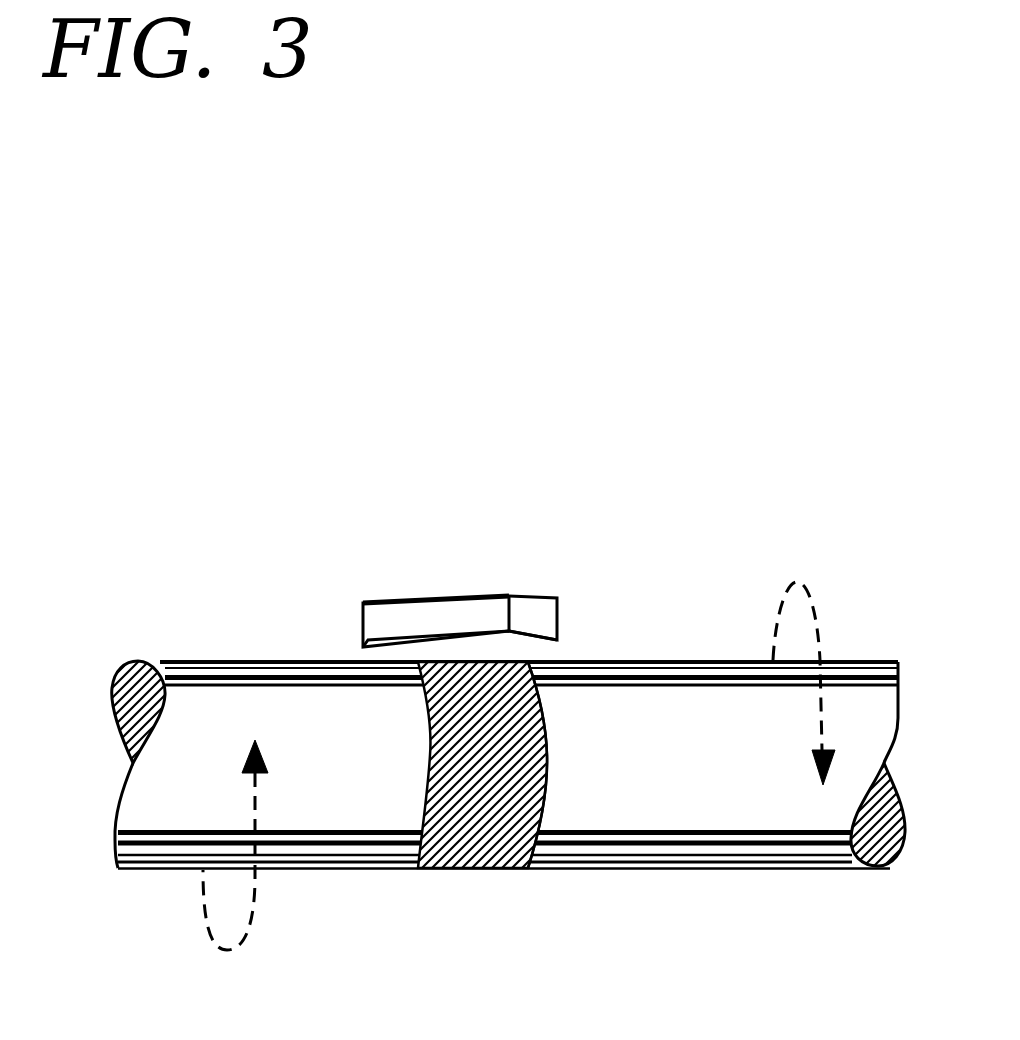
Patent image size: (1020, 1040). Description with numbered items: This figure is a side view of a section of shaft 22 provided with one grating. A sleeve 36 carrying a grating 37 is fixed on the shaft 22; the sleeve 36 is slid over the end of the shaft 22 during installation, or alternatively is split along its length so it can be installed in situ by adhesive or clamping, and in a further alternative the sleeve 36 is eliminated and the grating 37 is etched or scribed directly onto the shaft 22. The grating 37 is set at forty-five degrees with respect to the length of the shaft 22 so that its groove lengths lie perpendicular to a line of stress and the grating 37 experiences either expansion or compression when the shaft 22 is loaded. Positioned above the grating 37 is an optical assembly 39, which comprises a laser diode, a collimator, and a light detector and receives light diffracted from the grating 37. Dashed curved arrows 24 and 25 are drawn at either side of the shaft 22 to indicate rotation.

The shaft 22 is at (670, 753).
The direction of rotation arrow 24 is at (210, 845).
The direction of rotation arrow 25 is at (821, 670).
The sleeve 36 is at (547, 782).
The grating 37 is at (467, 868).
The optical assembly 39 is at (467, 598).